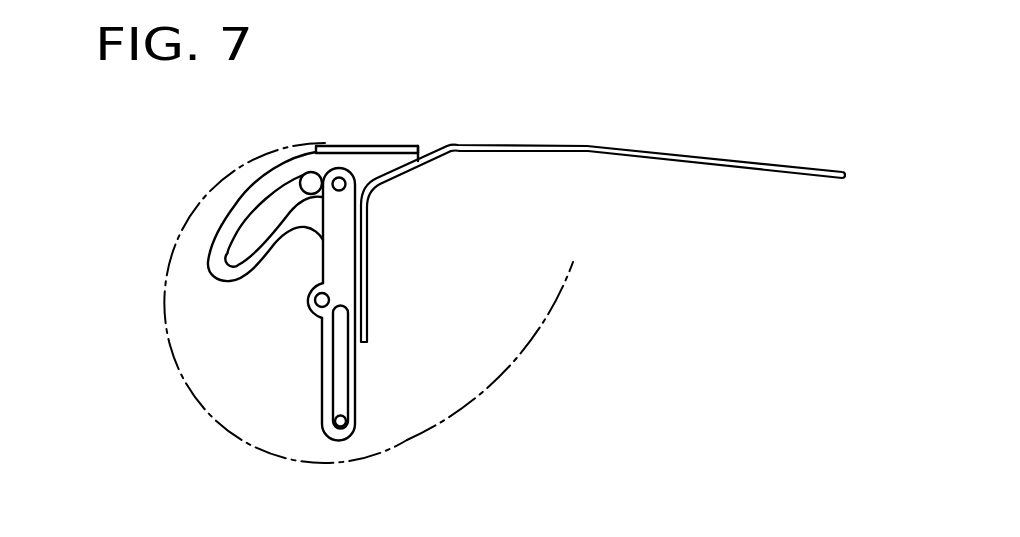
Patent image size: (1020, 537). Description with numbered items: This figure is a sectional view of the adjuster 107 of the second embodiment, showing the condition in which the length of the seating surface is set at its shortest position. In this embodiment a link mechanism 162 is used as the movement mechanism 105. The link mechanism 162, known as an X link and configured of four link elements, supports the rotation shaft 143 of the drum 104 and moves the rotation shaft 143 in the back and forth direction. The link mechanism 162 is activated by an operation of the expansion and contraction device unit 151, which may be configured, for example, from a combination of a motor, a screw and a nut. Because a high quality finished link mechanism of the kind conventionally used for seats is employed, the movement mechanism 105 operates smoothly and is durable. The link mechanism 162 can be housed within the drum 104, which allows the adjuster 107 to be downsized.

The drum 104 is at (166, 326).
The movement mechanism 105 is at (298, 392).
The adjuster 107 is at (513, 110).
The rotation shaft 143 is at (309, 301).
The expansion and contraction device unit 151 is at (337, 260).
The link mechanism 162 is at (318, 333).